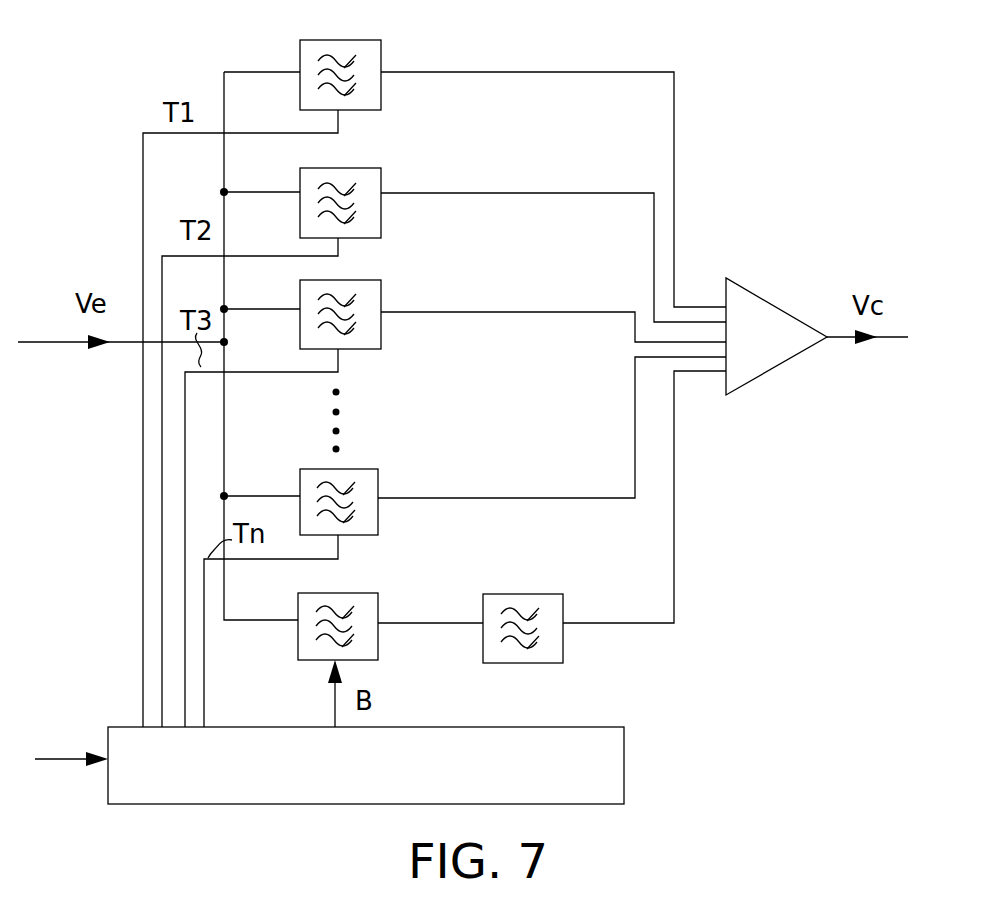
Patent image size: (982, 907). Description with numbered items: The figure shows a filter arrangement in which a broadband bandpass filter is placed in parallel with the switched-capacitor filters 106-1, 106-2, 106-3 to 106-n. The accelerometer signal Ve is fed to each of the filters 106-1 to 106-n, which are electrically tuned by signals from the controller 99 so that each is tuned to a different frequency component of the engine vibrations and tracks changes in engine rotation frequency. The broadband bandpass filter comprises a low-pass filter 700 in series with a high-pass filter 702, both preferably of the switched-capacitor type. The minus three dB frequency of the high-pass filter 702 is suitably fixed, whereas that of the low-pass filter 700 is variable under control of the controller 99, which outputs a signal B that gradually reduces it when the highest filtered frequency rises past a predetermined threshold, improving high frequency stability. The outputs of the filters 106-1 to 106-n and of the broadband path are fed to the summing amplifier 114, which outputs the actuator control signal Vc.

The filter 106-1 is at (381, 52).
The filter 106-2 is at (381, 181).
The filter 106-3 is at (381, 291).
The filter 106-n is at (370, 468).
The low-pass filter 700 is at (368, 593).
The high-pass filter 702 is at (538, 594).
The controller 99 is at (612, 770).
The summing amplifier 114 is at (770, 303).